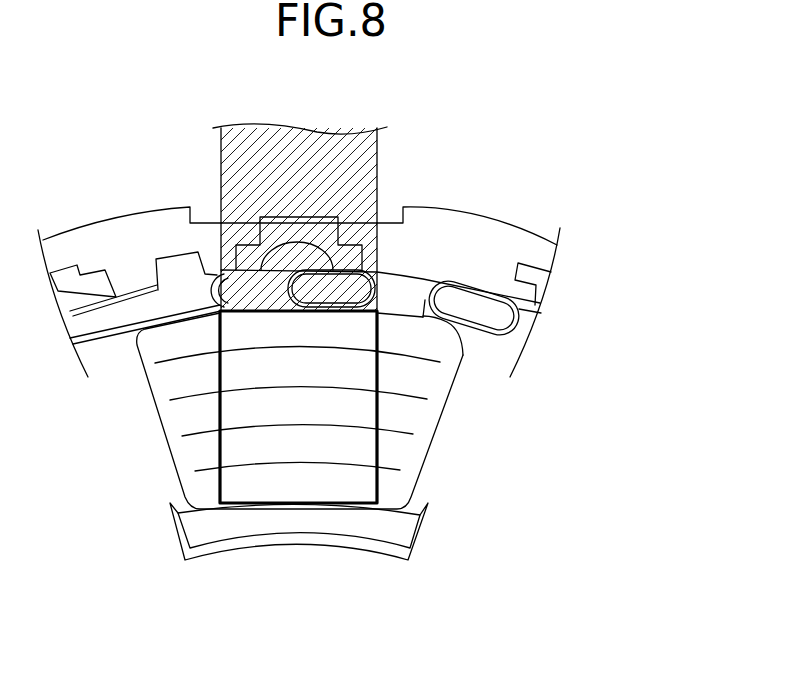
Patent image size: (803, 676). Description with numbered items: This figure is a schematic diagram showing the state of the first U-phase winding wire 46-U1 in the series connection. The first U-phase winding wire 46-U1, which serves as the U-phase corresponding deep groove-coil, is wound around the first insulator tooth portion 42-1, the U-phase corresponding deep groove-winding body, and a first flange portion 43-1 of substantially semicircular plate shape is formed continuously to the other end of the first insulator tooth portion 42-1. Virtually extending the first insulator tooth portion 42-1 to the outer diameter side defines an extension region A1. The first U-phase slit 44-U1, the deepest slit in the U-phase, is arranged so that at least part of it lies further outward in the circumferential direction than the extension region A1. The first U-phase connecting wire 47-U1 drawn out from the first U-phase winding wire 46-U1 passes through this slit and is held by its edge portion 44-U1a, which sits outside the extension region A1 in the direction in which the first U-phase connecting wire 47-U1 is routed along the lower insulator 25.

The extension region A1 is at (232, 161).
The first U-phase slit 44-U1 is at (396, 293).
The edge portion 44-U1a is at (425, 300).
The first U-phase connecting wire 47-U1 is at (487, 288).
The lower insulator 25 is at (483, 350).
The first U-phase winding wire 46-U1 is at (432, 450).
The first insulator tooth portion 42-1 is at (222, 483).
The first flange portion 43-1 is at (367, 552).